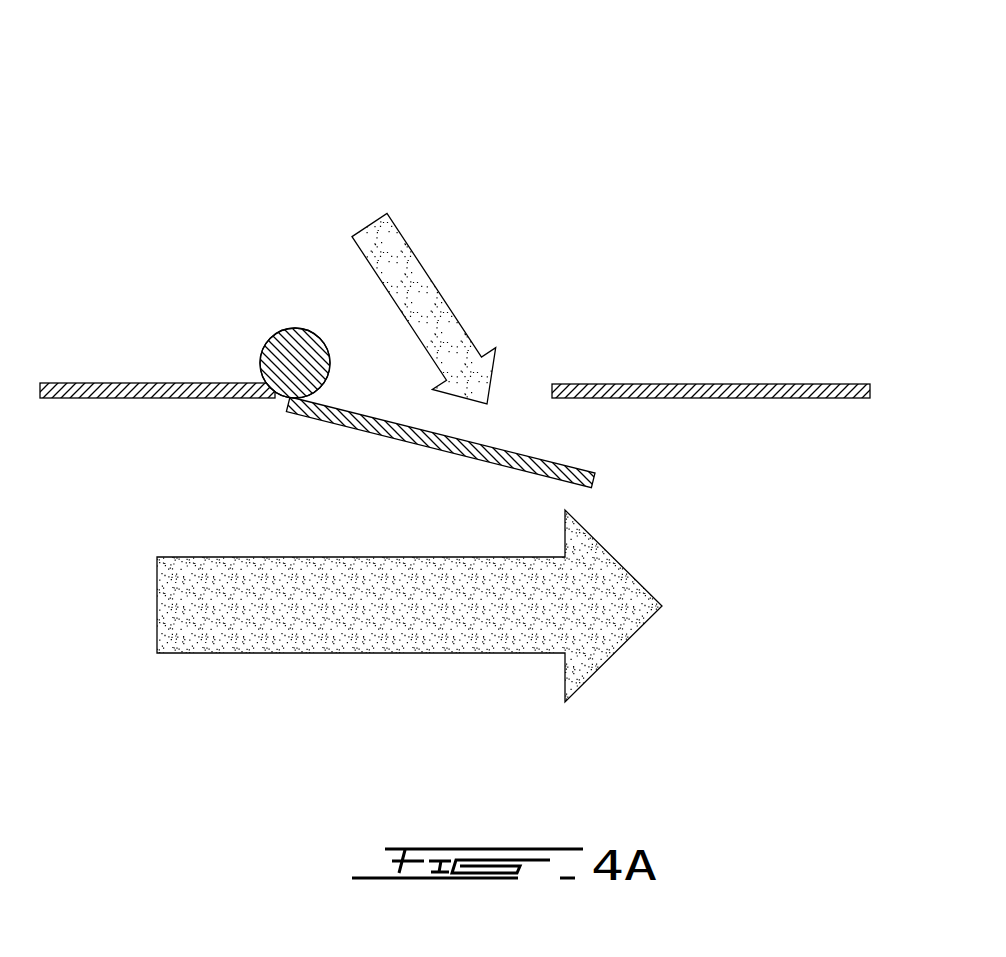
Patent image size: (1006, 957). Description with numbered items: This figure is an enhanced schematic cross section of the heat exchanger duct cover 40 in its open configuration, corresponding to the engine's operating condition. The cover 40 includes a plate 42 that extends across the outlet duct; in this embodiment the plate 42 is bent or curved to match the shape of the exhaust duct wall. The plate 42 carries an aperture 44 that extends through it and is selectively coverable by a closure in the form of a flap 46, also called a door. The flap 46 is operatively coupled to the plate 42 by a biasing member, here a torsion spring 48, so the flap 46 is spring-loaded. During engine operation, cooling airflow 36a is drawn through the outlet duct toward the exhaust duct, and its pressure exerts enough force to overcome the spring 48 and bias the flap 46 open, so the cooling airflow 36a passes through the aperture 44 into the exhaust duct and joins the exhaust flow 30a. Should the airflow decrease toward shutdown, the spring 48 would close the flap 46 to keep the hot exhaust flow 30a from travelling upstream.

The cover 40 is at (832, 172).
The plate 42 is at (768, 383).
The apertures 44 is at (522, 374).
The flaps 46 is at (593, 473).
The springs 48 is at (287, 351).
The cooling airflow 36a is at (407, 275).
The exhaust flow 30a is at (373, 617).